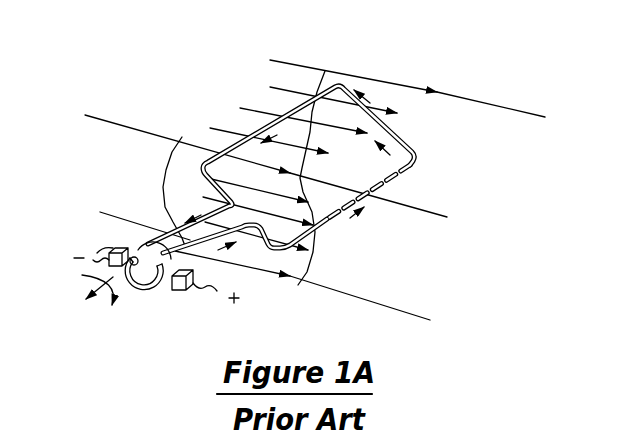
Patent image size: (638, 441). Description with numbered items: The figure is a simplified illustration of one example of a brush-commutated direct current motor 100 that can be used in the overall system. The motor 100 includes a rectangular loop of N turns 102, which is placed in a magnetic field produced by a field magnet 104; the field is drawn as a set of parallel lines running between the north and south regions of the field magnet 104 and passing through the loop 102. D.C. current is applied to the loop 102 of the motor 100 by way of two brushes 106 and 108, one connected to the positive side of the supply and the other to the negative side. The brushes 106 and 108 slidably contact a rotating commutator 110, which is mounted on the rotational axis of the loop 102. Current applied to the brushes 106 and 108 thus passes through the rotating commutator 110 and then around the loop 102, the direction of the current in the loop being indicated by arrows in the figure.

The motor 100 is at (426, 57).
The rectangular loop of N turns 102 is at (341, 85).
The field magnet 104 is at (295, 61).
The brush 106 is at (177, 296).
The brush 108 is at (108, 244).
The rotating commutator 110 is at (144, 291).